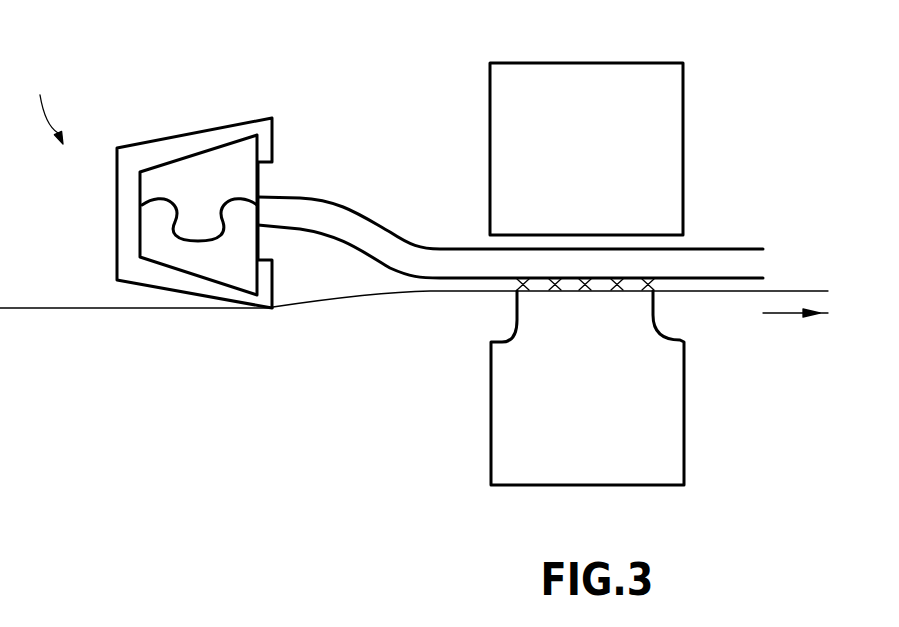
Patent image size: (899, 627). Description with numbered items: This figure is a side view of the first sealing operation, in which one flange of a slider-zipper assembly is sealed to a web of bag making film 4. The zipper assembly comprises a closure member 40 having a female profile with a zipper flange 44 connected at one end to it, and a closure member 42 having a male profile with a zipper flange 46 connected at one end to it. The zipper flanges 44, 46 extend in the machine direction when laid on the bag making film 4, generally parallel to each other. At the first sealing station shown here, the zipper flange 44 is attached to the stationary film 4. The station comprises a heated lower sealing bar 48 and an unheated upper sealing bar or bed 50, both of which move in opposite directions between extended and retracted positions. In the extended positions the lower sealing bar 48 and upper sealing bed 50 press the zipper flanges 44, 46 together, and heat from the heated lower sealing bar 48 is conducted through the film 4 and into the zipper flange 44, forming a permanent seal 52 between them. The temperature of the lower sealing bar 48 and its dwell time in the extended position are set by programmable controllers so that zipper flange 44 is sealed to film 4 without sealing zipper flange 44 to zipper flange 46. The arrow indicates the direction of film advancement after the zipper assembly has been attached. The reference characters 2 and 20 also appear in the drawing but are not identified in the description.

The extrusion apparatus 2 is at (46, 104).
The extruder head 20 is at (160, 137).
The closure member 42 is at (230, 160).
The closure member 40 is at (153, 247).
The zipper flange 46 is at (710, 247).
The zipper flange 44 is at (695, 280).
The bag making film 4 is at (793, 290).
The permanent seal 52 is at (517, 283).
The upper sealing bar or bed 50 is at (684, 78).
The lower sealing bar 48 is at (684, 448).